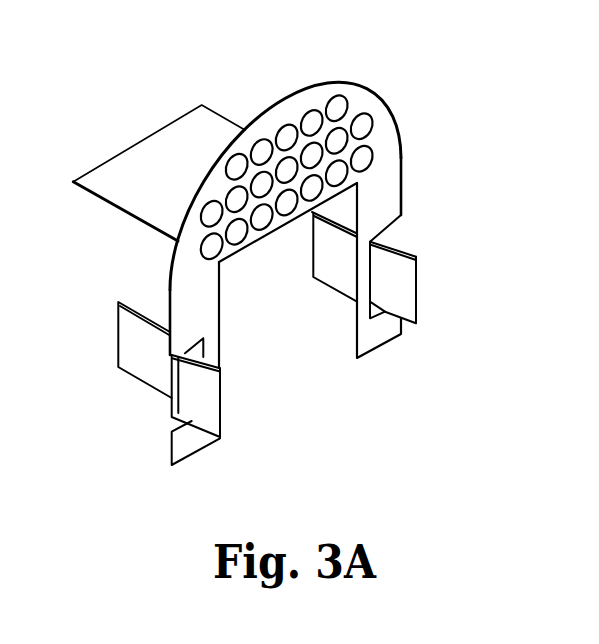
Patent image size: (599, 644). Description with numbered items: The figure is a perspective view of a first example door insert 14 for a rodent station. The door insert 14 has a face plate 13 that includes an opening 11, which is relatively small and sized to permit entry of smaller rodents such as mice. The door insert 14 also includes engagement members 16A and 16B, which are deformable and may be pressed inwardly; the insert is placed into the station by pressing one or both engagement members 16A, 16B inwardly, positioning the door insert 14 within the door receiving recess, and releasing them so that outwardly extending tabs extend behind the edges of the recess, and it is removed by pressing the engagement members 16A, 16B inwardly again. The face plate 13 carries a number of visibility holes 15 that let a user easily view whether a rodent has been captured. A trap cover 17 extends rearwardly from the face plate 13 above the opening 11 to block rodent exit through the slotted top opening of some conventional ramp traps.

The opening 11 is at (305, 345).
The face plate 13 is at (386, 192).
The door insert 14 is at (395, 77).
The visibility holes 15 is at (313, 118).
The engagement member 16A is at (207, 407).
The engagement member 16B is at (400, 286).
The trap cover 17 is at (173, 158).